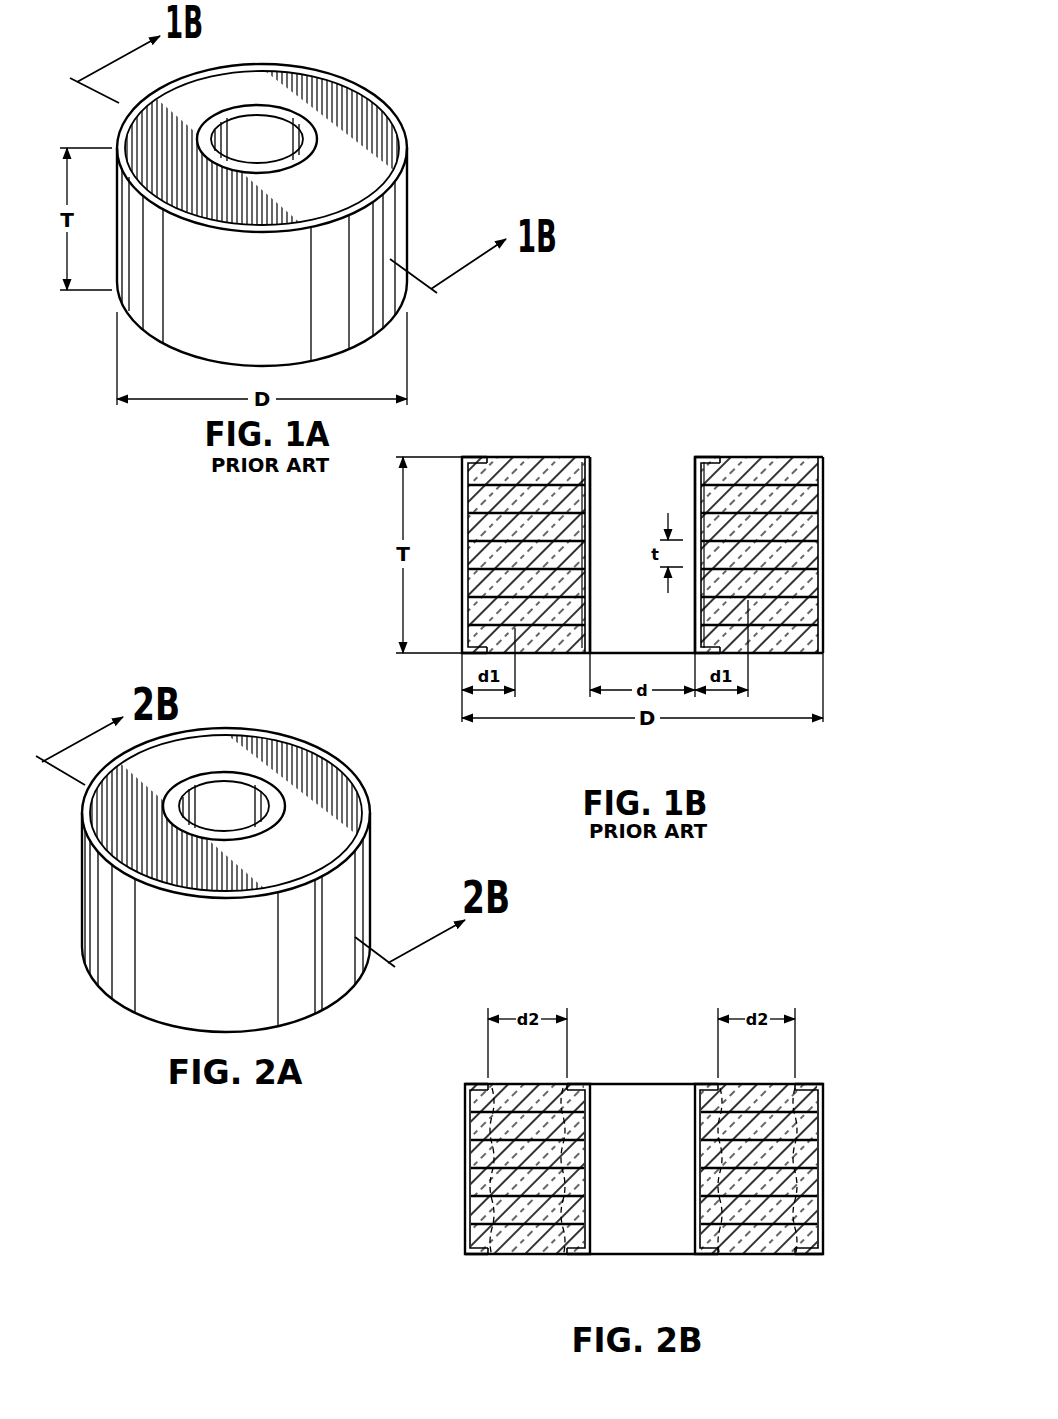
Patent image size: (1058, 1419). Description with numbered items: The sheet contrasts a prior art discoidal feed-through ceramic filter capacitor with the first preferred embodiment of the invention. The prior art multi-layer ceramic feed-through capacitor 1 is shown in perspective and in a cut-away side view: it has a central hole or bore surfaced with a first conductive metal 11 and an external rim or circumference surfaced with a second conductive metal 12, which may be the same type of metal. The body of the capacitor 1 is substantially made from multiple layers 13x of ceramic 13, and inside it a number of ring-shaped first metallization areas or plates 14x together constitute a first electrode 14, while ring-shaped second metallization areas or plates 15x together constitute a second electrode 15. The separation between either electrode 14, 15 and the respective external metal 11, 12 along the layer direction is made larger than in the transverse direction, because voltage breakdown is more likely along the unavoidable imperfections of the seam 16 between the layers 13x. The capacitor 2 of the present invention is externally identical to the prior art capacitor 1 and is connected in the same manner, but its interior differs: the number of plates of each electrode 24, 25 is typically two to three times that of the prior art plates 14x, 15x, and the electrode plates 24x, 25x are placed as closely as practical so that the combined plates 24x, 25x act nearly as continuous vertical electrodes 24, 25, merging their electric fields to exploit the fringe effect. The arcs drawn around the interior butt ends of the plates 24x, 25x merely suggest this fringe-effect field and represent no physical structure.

In FIG. 1A, the multi-layer ceramic feed-through capacitor 1 is at (376, 61).
In FIG. 1B, the multi-layer ceramic feed-through capacitor 1 is at (712, 415).
In FIG. 1A, the first conductive metal 11 is at (249, 105).
In FIG. 1B, the first conductive metal 11 is at (695, 464).
In FIG. 1A, the second conductive metal 12 is at (410, 207).
In FIG. 1B, the second conductive metal 12 is at (474, 457).
In FIG. 1A, the ceramic 13 is at (348, 113).
In FIG. 1B, the ceramic 13 is at (493, 511).
In FIG. 1B, the layers of ceramic 13x is at (787, 553).
In FIG. 1B, the first electrode 14 is at (535, 480).
In FIG. 1B, the first metallization areas 14x is at (760, 480).
In FIG. 1B, the second electrode 15 is at (567, 503).
In FIG. 1B, the second metallization areas 15x is at (750, 508).
In FIG. 1B, the seam 16 is at (718, 464).
In FIG. 2A, the capacitor 2 is at (285, 730).
In FIG. 2B, the capacitor 2 is at (808, 1065).
In FIG. 2B, the electrode 24 is at (498, 1178).
In FIG. 2B, the electrode plates 24x is at (480, 1254).
In FIG. 2B, the electrode 25 is at (556, 1177).
In FIG. 2B, the electrode plates 25x is at (572, 1254).